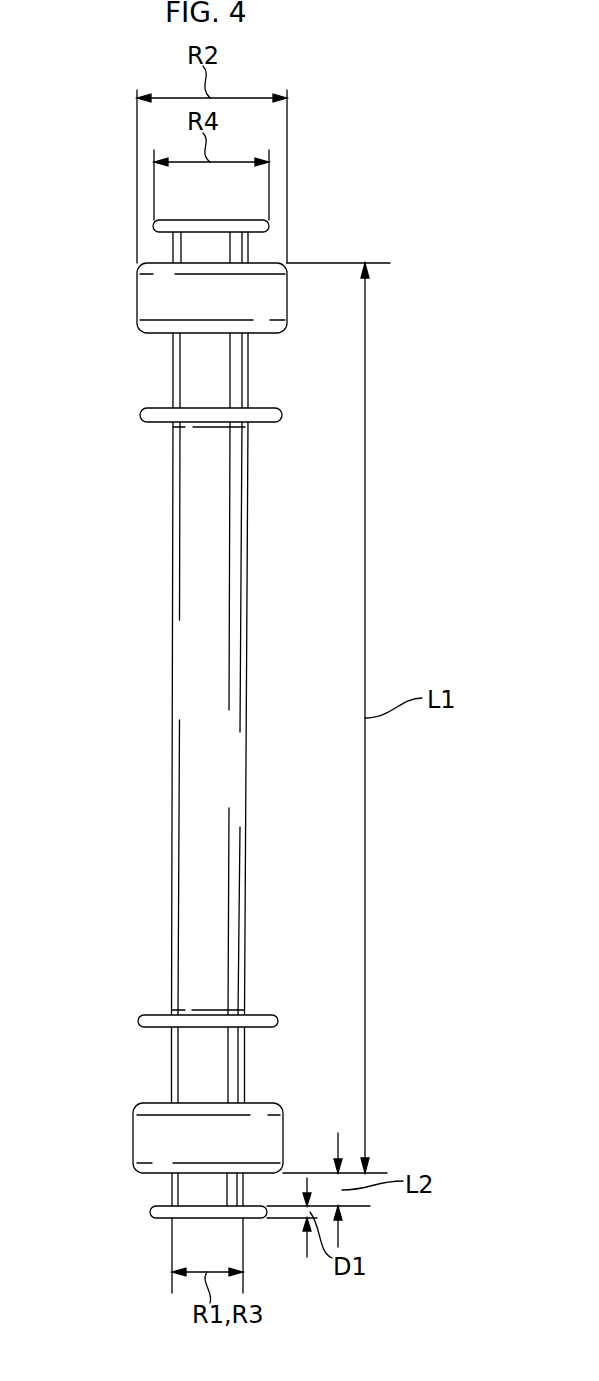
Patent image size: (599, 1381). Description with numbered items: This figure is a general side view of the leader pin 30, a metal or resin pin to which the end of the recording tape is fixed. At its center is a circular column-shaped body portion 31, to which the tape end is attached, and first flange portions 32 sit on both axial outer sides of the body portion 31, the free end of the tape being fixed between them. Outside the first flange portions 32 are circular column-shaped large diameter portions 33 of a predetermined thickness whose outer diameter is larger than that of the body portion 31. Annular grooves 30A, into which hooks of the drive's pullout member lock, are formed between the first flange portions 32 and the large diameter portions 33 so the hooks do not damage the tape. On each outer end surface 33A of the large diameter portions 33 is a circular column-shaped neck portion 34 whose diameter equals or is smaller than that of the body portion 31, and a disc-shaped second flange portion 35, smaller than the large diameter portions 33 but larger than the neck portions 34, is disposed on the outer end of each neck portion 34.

The leader pin 30 is at (452, 352).
The annular groove 30A is at (203, 370).
The body portion 31 is at (193, 669).
The first flange portion 32 is at (140, 413).
The large diameter portion 33 is at (137, 297).
The outer end surface 33A is at (262, 262).
The neck portion 34 is at (173, 243).
The second flange portion 35 is at (210, 220).